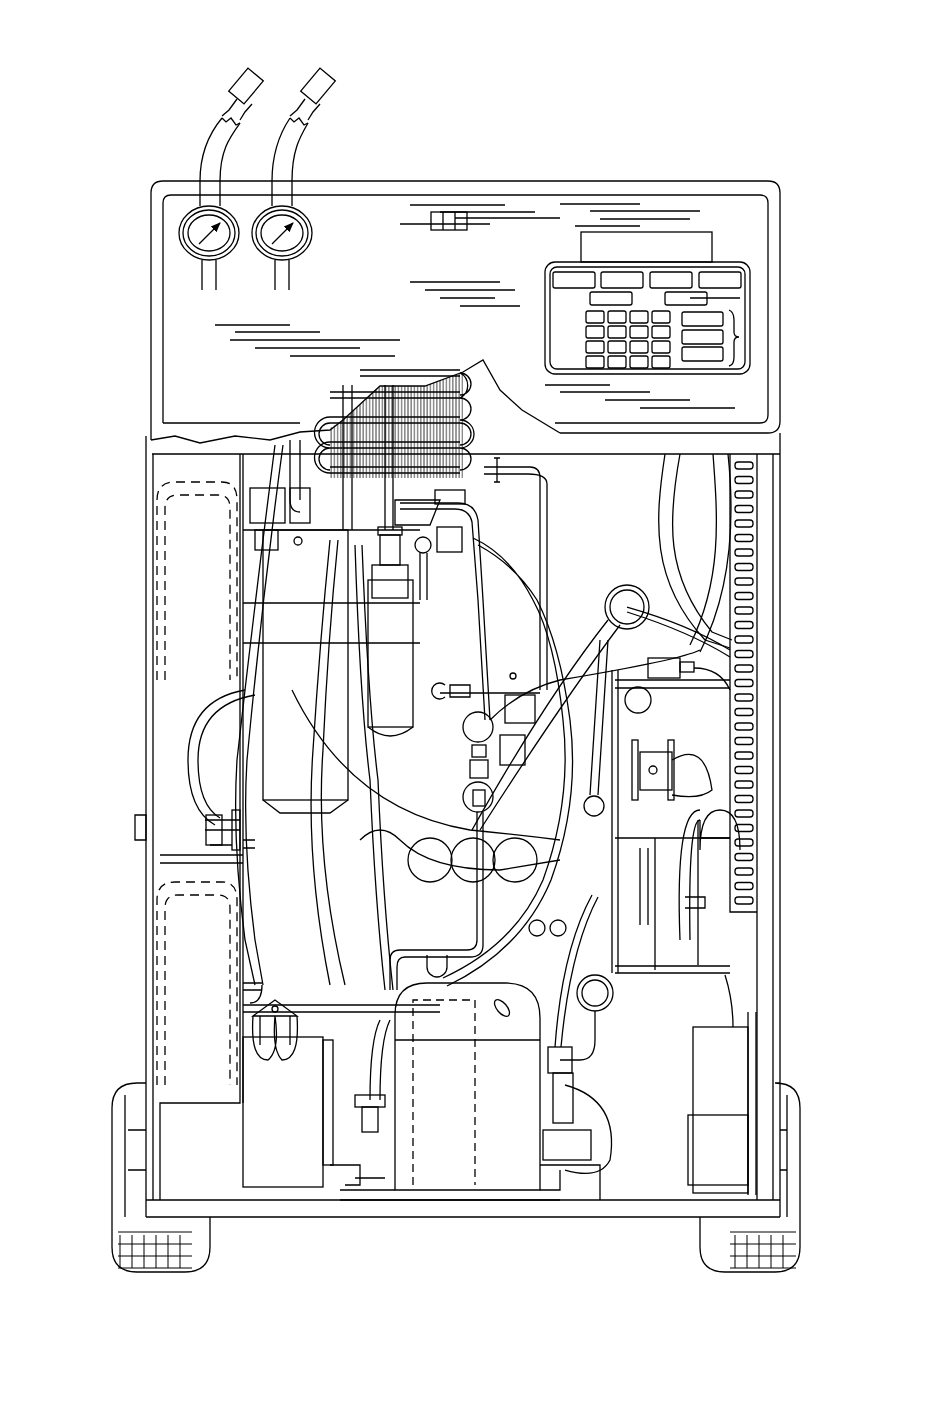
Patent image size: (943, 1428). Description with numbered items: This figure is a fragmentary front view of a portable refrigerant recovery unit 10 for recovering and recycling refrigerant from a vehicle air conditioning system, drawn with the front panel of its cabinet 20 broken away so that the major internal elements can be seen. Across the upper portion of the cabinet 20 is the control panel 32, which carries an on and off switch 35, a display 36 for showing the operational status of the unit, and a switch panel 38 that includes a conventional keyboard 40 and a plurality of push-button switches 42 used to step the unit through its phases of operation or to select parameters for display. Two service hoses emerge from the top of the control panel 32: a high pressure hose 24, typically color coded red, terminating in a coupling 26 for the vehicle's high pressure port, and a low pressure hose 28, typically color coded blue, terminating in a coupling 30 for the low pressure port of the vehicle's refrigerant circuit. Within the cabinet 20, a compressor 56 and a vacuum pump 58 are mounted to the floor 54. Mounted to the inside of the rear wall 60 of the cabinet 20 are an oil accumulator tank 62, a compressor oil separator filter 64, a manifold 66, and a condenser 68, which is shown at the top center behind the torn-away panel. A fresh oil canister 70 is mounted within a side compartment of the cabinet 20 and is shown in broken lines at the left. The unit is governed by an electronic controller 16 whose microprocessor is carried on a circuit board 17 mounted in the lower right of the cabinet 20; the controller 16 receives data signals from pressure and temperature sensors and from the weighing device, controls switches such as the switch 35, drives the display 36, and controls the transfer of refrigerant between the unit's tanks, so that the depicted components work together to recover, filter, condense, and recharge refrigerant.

The refrigerant recovery unit 10 is at (662, 152).
The cabinet 20 is at (746, 172).
The high pressure hose 24 is at (300, 140).
The coupling 26 is at (330, 92).
The low pressure hose 28 is at (207, 124).
The coupling 30 is at (237, 90).
The control panel 32 is at (503, 215).
The on and off switch 35 is at (441, 216).
The display 36 is at (712, 242).
The switch panel 38 is at (737, 299).
The keyboard 40 is at (672, 372).
The push-button switches 42 is at (572, 280).
The floor 54 is at (650, 1185).
The compressor 56 is at (510, 1165).
The vacuum pump 58 is at (340, 1165).
The rear wall 60 is at (612, 565).
The oil accumulator tank 62 is at (348, 797).
The compressor oil separator filter 64 is at (433, 706).
The manifold 66 is at (370, 548).
The condenser 68 is at (505, 442).
The fresh oil canister 70 is at (158, 540).
The electronic controller 16 is at (700, 712).
The circuit board 17 is at (703, 945).